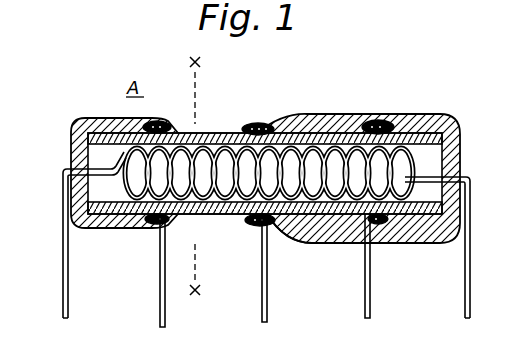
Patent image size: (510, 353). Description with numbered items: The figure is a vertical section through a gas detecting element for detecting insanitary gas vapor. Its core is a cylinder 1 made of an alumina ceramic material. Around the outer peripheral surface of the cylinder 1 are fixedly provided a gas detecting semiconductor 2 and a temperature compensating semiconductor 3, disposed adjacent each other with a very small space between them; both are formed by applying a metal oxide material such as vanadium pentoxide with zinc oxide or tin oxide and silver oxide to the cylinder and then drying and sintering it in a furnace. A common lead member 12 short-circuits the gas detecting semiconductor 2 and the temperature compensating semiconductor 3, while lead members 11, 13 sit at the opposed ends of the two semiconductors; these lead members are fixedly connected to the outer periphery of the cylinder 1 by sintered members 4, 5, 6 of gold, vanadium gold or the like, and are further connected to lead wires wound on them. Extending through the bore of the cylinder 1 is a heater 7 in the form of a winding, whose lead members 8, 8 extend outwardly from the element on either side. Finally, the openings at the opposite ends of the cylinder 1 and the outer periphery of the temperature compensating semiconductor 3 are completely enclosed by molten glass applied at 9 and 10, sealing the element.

The cylinder 1 is at (224, 132).
The gas detecting semiconductor 2 is at (221, 219).
The temperature compensating semiconductor 3 is at (300, 240).
The sintered member 4 is at (151, 222).
The sintered member 5 is at (252, 221).
The sintered member 6 is at (382, 244).
The heater 7 is at (351, 133).
The lead member 8 is at (63, 270).
The molten glass 9 is at (412, 116).
The molten glass 10 is at (80, 129).
The lead member 11 is at (158, 286).
The common lead member 12 is at (262, 289).
The lead member 13 is at (363, 273).